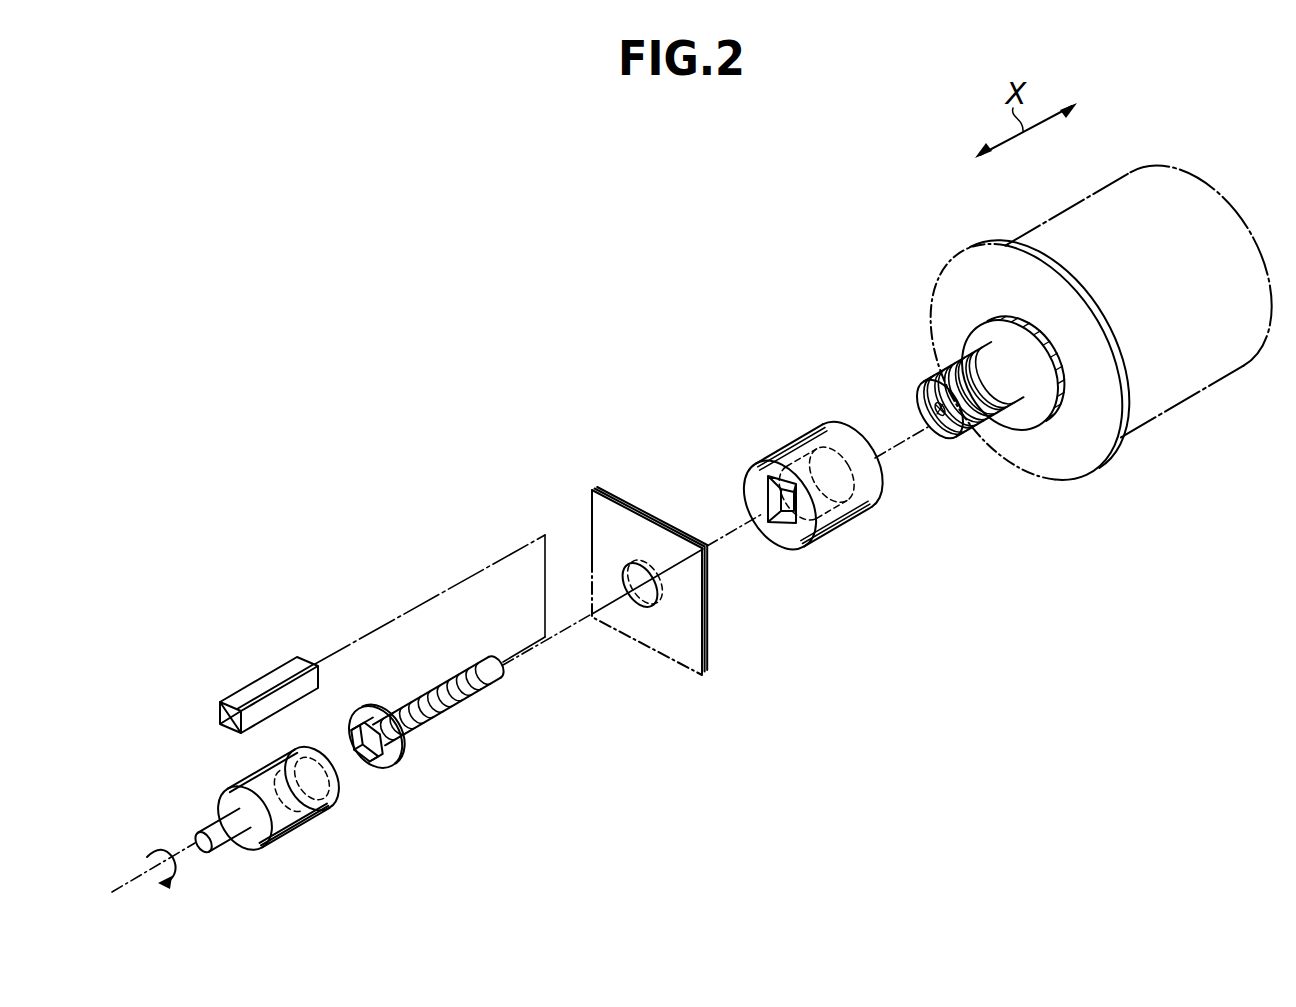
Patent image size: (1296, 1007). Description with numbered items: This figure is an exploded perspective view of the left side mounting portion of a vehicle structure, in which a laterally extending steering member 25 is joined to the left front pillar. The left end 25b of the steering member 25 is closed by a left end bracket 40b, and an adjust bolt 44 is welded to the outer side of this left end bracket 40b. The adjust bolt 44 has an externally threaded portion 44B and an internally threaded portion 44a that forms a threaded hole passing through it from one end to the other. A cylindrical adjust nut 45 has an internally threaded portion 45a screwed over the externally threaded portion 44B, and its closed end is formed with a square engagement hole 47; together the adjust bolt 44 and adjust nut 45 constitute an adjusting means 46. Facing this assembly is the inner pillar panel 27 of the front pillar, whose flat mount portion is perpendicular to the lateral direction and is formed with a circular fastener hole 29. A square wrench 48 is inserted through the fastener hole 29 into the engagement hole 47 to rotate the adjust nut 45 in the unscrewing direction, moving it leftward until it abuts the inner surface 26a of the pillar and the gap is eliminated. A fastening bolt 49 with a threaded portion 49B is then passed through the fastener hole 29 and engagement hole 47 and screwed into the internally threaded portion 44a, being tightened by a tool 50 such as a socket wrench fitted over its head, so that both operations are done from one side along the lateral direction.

The steering member 25 is at (1146, 307).
The left end of the steering member 25b is at (1150, 372).
The inner surface of the left front pillar 26a is at (710, 595).
The inner pillar panel 27 is at (709, 614).
The fastener hole 29 is at (642, 607).
The left end bracket 40b is at (1077, 480).
The adjust bolt 44 is at (972, 382).
The internally threaded portion 44a is at (940, 415).
The externally threaded portion 44B is at (982, 430).
The adjust nut 45 is at (812, 462).
The internally threaded portion 45a is at (870, 505).
The adjusting means 46 is at (886, 205).
The engagement hole 47 is at (779, 527).
The square wrench 48 is at (260, 680).
The fastening bolt 49 is at (437, 742).
The threaded portion 49B is at (463, 705).
The tool 50 is at (283, 828).